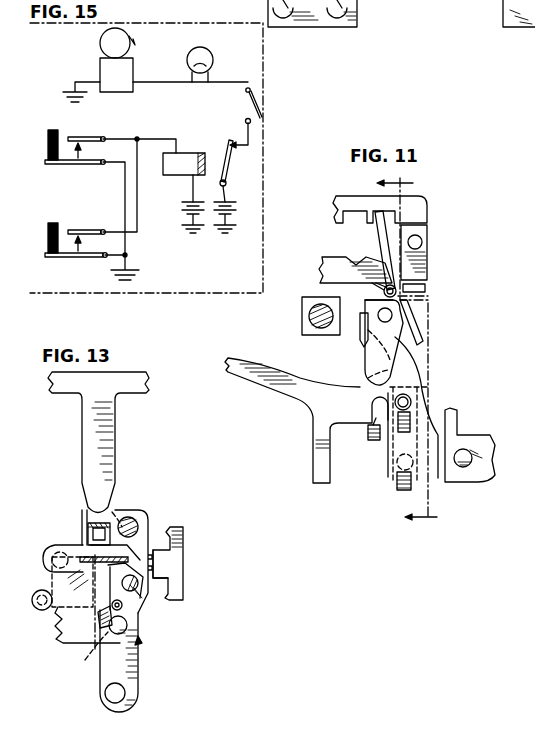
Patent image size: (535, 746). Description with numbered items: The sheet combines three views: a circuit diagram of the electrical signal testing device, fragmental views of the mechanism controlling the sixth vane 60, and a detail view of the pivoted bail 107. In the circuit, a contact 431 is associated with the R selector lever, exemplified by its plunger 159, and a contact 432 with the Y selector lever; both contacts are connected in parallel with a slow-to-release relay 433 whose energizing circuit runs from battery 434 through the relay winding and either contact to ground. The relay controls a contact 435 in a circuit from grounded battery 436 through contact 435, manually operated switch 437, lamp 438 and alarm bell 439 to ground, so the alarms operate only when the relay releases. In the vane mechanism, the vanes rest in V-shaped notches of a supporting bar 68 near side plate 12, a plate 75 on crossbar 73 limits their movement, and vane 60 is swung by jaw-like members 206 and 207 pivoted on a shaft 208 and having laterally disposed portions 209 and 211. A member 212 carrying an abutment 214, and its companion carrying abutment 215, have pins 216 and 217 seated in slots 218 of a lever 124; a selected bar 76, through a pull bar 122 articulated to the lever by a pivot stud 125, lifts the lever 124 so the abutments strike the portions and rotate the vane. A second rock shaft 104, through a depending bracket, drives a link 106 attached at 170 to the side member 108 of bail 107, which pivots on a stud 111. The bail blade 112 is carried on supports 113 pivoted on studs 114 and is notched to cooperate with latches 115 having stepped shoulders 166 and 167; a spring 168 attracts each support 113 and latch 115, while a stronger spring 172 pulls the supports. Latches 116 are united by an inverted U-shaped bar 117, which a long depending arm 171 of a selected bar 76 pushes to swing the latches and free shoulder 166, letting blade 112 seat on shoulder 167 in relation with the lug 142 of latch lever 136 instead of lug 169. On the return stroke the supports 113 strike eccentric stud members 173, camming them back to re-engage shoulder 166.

In FIG. 15, the plunger 159 is at (64, 128).
In FIG. 15, the contact 431 is at (82, 145).
In FIG. 15, the contact 432 is at (84, 238).
In FIG. 15, the slow-to-release relay 433 is at (176, 146).
In FIG. 15, the battery 434 is at (190, 218).
In FIG. 15, the contact 435 is at (229, 160).
In FIG. 15, the grounded battery 436 is at (228, 216).
In FIG. 15, the manually operated switch 437 is at (250, 108).
In FIG. 15, the lamp 438 is at (212, 62).
In FIG. 15, the alarm bell 439 is at (128, 72).
In FIG. 11, the side plate 12 is at (419, 352).
In FIG. 11, the plate 75 is at (348, 197).
In FIG. 11, the crossbar 73 is at (428, 238).
In FIG. 11, the sixth vane 60 is at (380, 243).
In FIG. 11, the supporting bar 68 is at (335, 257).
In FIG. 11, the jaw-like member 206 is at (386, 288).
In FIG. 11, the jaw-like member 207 is at (405, 296).
In FIG. 11, the laterally disposed portion 209 is at (403, 306).
In FIG. 11, the laterally disposed portion 211 is at (365, 300).
In FIG. 11, the second rock shaft 104 is at (302, 322).
In FIG. 11, the abutment 215 is at (364, 342).
In FIG. 11, the shaft 208 is at (387, 323).
In FIG. 11, the abutment 214 is at (413, 330).
In FIG. 11, the lever 124 is at (342, 395).
In FIG. 11, the member 212 is at (397, 375).
In FIG. 11, the pin 216 is at (410, 404).
In FIG. 11, the slot 218 is at (413, 392).
In FIG. 11, the pin 217 is at (395, 476).
In FIG. 11, the pull bar 122 is at (457, 482).
In FIG. 11, the pivot stud 125 is at (463, 480).
In FIG. 13, the selectable bar 76 is at (68, 396).
In FIG. 13, the depending arm 171 is at (92, 476).
In FIG. 13, the bail blade 112 is at (74, 532).
In FIG. 13, the pivot 114 is at (66, 522).
In FIG. 13, the latch 116 is at (112, 512).
In FIG. 13, the inverted U-shaped bar 117 is at (120, 517).
In FIG. 13, the latch 115 is at (140, 513).
In FIG. 13, the lug 169 is at (148, 530).
In FIG. 13, the support 113 is at (52, 544).
In FIG. 13, the link 106 is at (75, 644).
In FIG. 13, the eccentric stud member 173 is at (50, 611).
In FIG. 13, the side member 108 is at (133, 684).
In FIG. 13, the stud 111 is at (120, 692).
In FIG. 13, the spring 168 is at (139, 620).
In FIG. 13, the bail 107 is at (141, 641).
In FIG. 13, the stepped shoulder 167 is at (146, 592).
In FIG. 13, the stepped shoulder 166 is at (143, 585).
In FIG. 13, the spring 172 is at (103, 630).
In FIG. 13, the link attachment point 170 is at (107, 655).
In FIG. 13, the latch lever 136 is at (180, 568).
In FIG. 13, the projection 142 is at (183, 575).